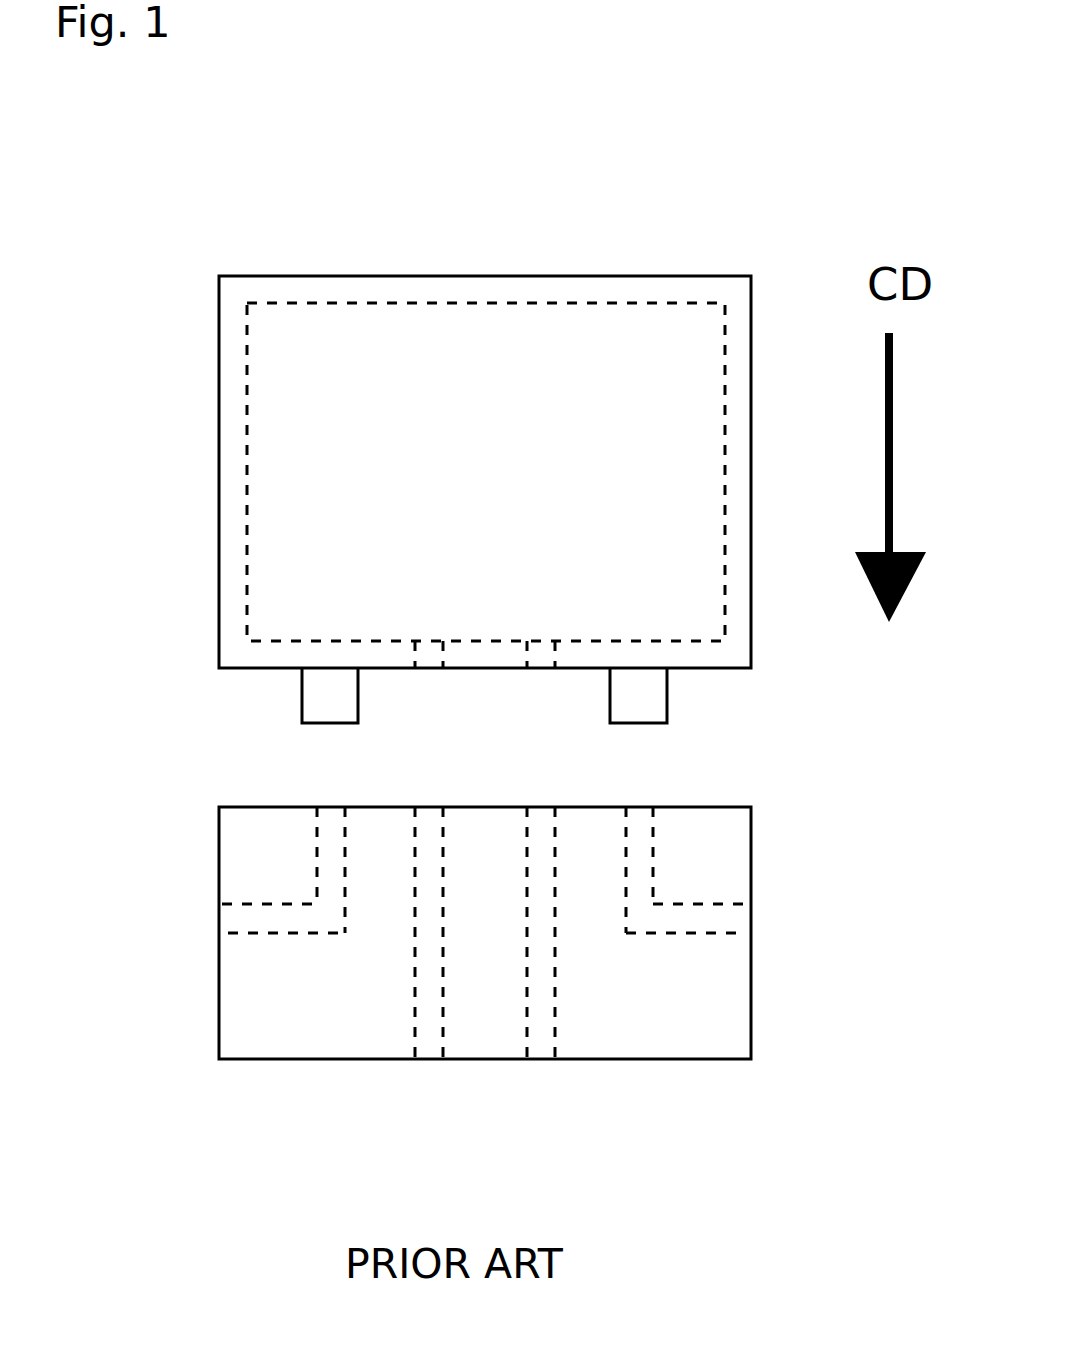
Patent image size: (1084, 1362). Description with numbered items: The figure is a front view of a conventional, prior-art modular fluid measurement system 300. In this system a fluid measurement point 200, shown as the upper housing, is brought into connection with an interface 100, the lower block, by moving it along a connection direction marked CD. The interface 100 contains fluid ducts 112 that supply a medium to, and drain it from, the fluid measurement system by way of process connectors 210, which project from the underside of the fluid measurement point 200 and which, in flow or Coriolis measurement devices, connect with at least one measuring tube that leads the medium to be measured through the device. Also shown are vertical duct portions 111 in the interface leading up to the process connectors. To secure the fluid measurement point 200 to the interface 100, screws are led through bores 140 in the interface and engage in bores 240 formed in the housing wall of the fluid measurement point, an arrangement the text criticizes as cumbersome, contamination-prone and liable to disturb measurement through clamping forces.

The interface 100 is at (722, 1087).
The vertical channel portions 111 is at (323, 807).
The fluid ducts 112 is at (247, 918).
The bores 140 is at (557, 1073).
The fluid measurement point 200 is at (192, 445).
The process connectors 210 is at (330, 695).
The bores 240 is at (673, 704).
The modular fluid measurement system 300 is at (778, 223).